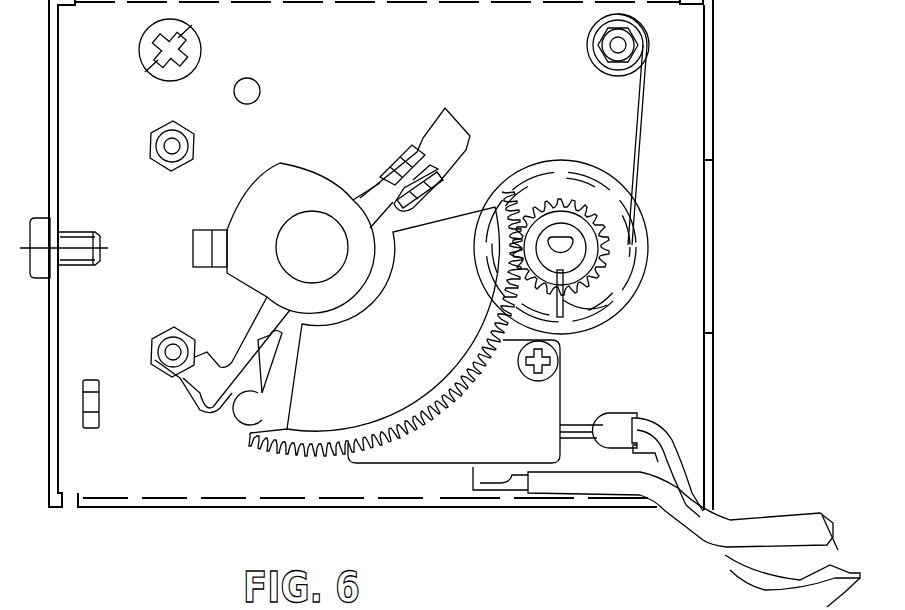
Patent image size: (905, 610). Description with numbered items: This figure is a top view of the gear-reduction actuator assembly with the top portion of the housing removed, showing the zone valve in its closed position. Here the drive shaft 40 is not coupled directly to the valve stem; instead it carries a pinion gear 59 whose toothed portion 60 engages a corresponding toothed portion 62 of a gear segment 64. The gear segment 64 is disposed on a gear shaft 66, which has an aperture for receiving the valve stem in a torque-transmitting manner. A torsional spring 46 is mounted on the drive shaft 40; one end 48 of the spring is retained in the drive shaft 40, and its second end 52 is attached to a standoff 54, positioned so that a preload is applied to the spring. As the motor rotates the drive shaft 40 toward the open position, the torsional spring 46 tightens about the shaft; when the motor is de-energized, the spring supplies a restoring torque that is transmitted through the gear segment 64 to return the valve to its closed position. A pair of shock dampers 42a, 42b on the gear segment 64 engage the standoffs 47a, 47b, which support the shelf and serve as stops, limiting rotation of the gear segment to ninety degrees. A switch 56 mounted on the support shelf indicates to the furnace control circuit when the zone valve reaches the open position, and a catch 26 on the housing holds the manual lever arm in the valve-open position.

The catch 26 is at (80, 395).
The drive shaft 40 is at (585, 236).
The shock damper 42a is at (440, 140).
The shock damper 42b is at (203, 390).
The torsional spring 46 is at (632, 242).
The standoff 47a is at (172, 146).
The standoff 47b is at (173, 338).
The end of torsional spring 48 is at (565, 302).
The second end of torsional spring 52 is at (645, 98).
The standoff 54 is at (620, 47).
The switch 56 is at (548, 453).
The pinion gear 59 is at (592, 253).
The toothed portion of pinion gear 60 is at (550, 203).
The toothed portion of gear segment 62 is at (478, 358).
The gear segment 64 is at (268, 420).
The gear shaft 66 is at (326, 261).